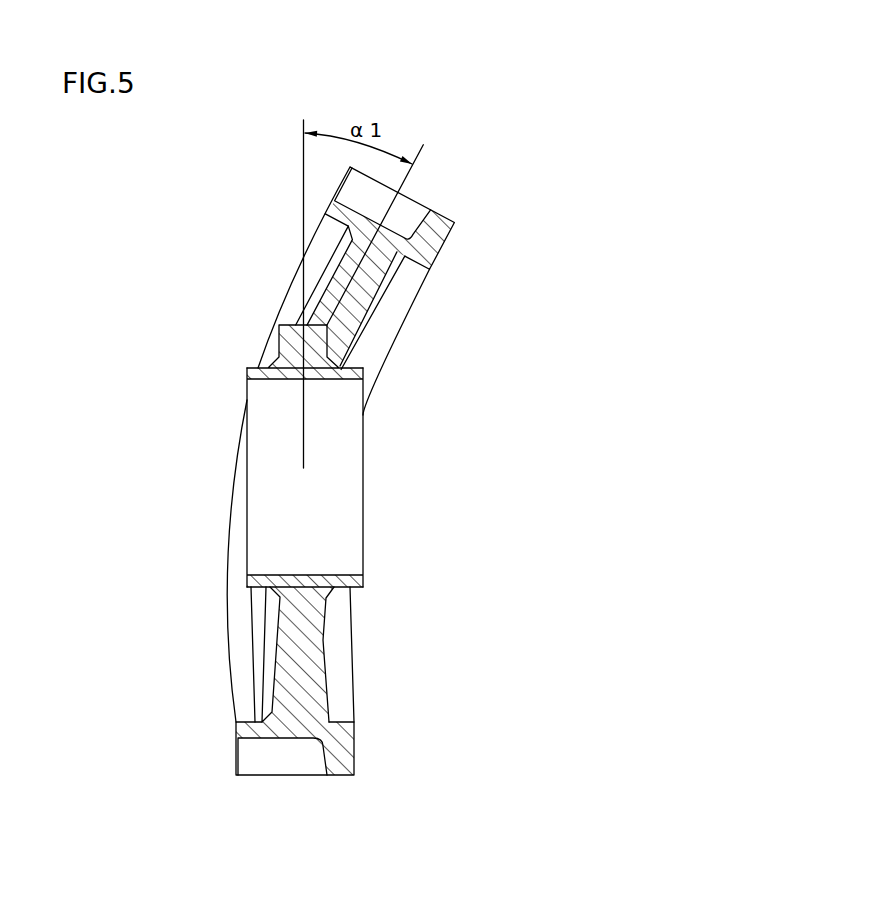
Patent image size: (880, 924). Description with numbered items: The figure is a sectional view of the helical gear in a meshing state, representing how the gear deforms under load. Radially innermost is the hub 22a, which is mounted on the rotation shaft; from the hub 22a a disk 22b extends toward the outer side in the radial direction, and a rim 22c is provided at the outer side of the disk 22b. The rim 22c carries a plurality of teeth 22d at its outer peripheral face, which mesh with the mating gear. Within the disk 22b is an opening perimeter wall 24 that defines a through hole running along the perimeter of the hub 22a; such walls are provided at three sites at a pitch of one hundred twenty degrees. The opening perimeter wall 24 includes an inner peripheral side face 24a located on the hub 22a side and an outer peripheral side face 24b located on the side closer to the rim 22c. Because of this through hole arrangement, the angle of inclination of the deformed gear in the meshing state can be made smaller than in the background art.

The hub 22a is at (240, 587).
The disk 22b is at (300, 635).
The rim 22c is at (335, 757).
The teeth 22d is at (278, 755).
The opening perimeter wall 24 is at (351, 308).
The inner peripheral side face 24a is at (291, 328).
The outer peripheral side face 24b is at (368, 268).